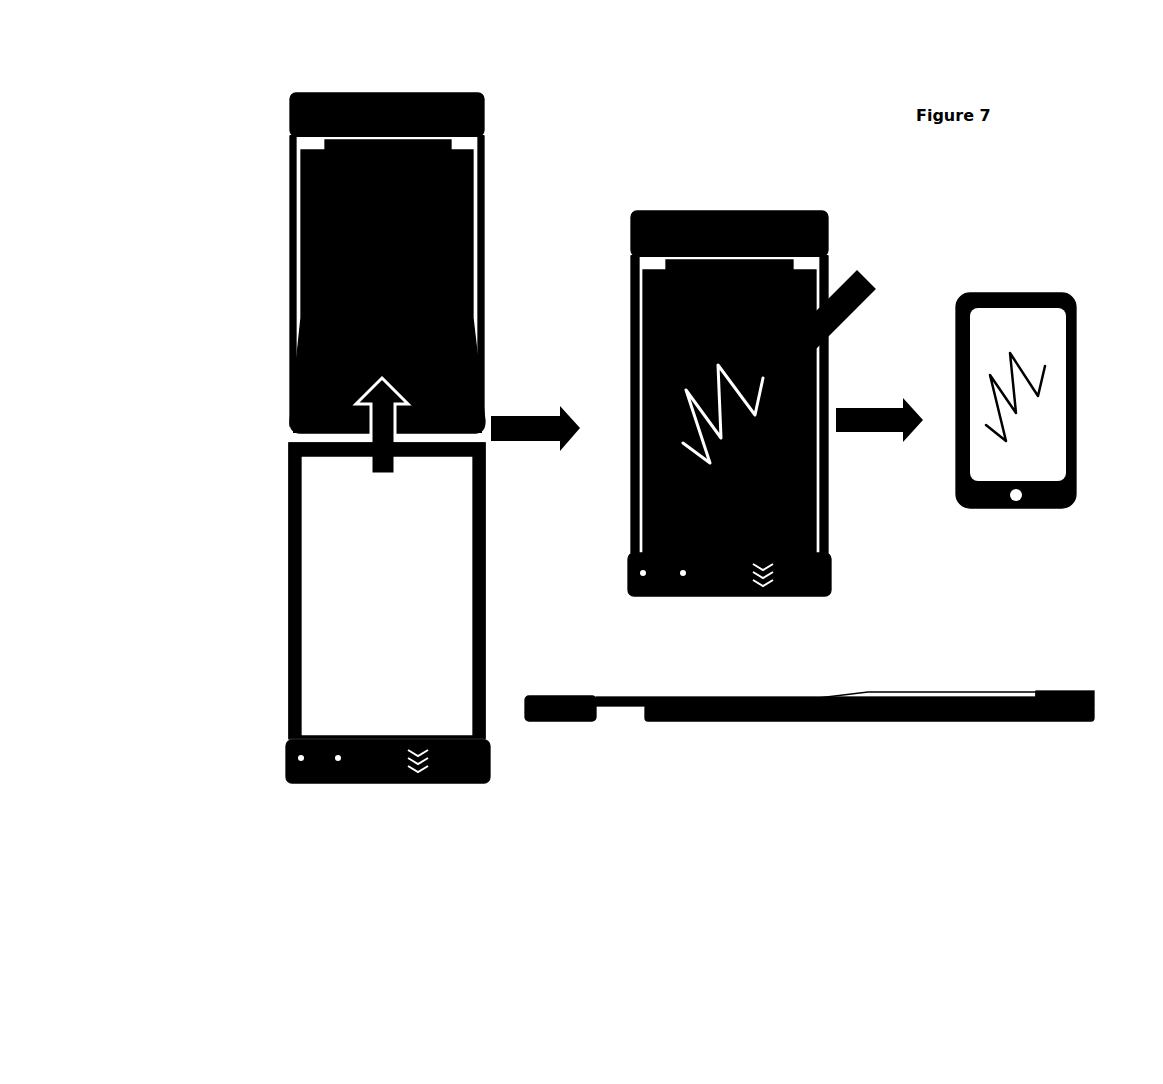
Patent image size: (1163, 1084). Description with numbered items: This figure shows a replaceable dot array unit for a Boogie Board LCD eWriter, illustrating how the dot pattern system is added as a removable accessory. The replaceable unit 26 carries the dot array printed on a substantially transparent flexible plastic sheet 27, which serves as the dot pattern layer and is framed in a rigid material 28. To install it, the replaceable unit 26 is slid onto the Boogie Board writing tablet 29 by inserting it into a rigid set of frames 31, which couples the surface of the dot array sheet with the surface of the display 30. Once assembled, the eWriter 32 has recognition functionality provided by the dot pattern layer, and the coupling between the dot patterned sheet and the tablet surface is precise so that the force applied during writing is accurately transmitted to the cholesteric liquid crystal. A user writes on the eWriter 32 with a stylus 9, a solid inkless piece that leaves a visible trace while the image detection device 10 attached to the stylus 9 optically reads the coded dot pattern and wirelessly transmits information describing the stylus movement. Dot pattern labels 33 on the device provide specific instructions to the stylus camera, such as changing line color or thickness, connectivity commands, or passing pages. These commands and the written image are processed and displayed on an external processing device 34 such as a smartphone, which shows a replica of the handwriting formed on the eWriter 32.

The stylus 9 is at (810, 357).
The image detection device 10 is at (857, 298).
The replaceable unit 26 is at (220, 775).
The substantially transparent flexible plastic sheet 27 is at (392, 592).
The rigid material 28 is at (477, 528).
The Boogie Board writing tablet 29 is at (220, 422).
The display 30 is at (278, 414).
The rigid set of frames 31 is at (477, 203).
The eWriter 32 is at (823, 190).
The dot pattern labels 33 is at (278, 776).
The external processing device 34 is at (1066, 500).